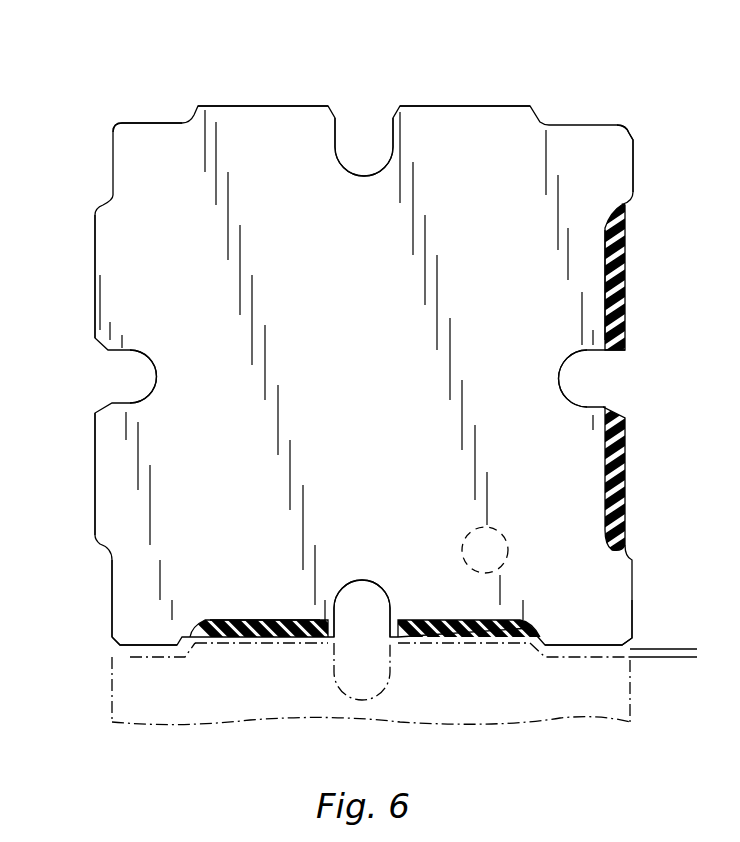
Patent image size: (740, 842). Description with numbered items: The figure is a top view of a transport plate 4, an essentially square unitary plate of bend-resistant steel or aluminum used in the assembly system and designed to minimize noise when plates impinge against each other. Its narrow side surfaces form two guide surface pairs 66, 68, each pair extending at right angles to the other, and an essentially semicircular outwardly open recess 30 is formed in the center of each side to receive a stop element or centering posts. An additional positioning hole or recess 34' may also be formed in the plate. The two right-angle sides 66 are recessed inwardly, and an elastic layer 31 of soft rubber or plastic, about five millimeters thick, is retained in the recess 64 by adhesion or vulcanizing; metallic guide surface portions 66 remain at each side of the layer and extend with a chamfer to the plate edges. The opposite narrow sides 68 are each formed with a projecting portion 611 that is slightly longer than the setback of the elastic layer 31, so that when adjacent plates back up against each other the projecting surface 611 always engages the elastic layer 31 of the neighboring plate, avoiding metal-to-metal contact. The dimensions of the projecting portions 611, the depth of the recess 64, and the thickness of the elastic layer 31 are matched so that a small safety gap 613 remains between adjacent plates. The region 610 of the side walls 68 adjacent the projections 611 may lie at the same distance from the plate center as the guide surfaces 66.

The transport plate 4 is at (448, 138).
The semicircular recess 30 is at (356, 174).
The elastic layer 31 is at (621, 283).
The positioning hole 34' is at (569, 556).
The recess 64 is at (603, 293).
The guide surface 66 is at (634, 150).
The guide surface 68 is at (287, 104).
The side wall region 610 is at (150, 123).
The projecting portion 611 is at (493, 106).
The safety gap 613 is at (681, 605).